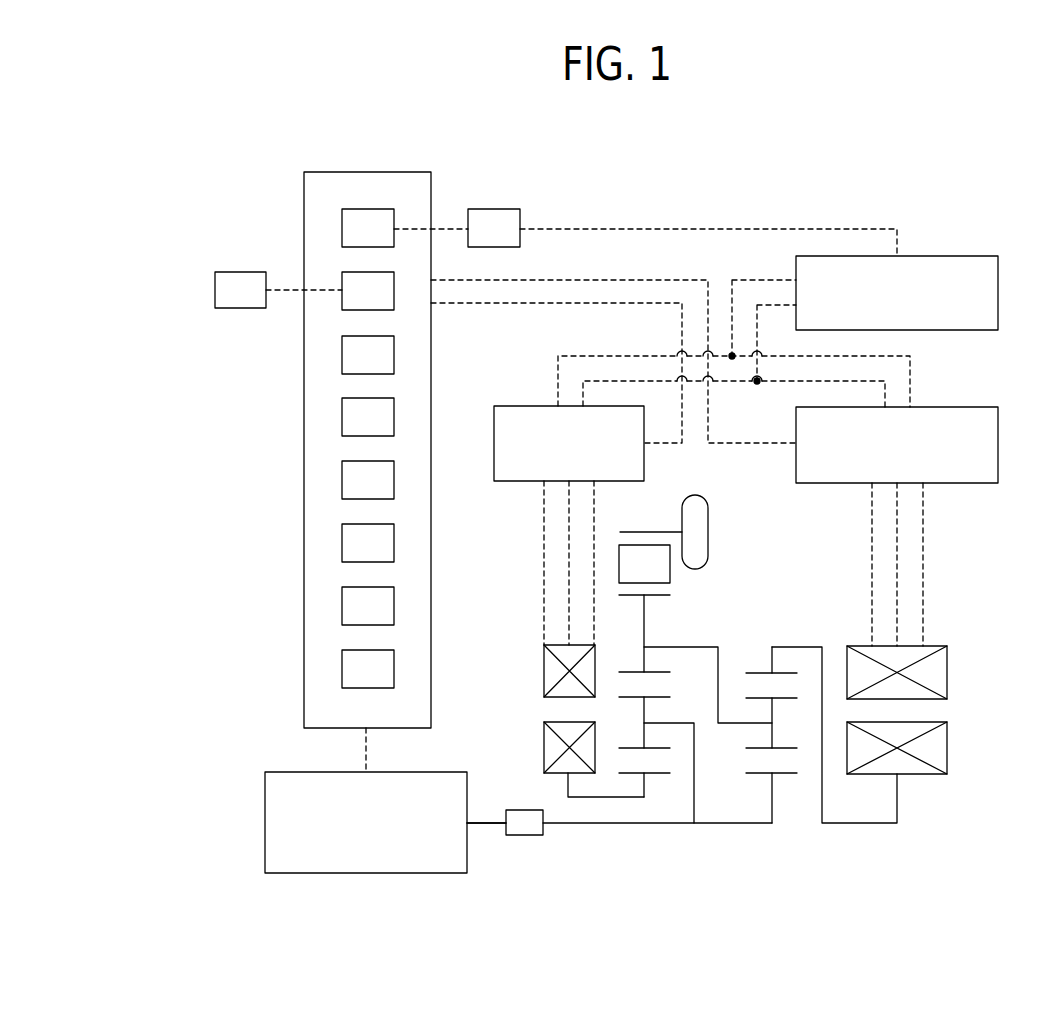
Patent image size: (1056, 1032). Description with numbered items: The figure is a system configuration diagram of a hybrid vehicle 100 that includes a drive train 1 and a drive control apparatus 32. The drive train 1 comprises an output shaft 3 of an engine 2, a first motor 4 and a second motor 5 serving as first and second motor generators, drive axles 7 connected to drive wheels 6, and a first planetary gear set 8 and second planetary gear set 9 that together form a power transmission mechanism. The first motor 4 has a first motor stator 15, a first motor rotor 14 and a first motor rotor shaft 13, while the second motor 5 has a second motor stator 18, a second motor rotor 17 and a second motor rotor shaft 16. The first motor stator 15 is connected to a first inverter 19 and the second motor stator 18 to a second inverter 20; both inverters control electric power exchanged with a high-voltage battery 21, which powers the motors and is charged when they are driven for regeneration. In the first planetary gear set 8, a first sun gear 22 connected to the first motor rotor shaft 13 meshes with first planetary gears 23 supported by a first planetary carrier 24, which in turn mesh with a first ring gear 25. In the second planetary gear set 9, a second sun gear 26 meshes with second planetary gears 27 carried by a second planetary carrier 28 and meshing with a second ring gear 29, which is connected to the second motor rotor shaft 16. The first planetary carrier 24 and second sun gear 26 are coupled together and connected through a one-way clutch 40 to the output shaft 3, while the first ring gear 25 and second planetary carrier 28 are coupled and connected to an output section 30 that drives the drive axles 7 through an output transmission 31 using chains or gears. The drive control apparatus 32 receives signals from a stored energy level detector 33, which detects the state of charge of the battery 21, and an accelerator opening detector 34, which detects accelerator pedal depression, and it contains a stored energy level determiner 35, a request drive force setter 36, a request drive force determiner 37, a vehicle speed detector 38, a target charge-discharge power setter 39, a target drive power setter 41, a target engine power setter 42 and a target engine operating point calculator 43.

The hybrid vehicle 100 is at (838, 195).
The drive train 1 is at (966, 547).
The engine 2 is at (265, 805).
The output shaft 3 is at (487, 823).
The first motor 4 is at (517, 641).
The second motor 5 is at (949, 628).
The drive wheels 6 is at (708, 520).
The drive axles 7 is at (644, 532).
The first planetary gear set 8 is at (693, 628).
The second planetary gear set 9 is at (799, 624).
The first motor rotor shaft 13 is at (604, 797).
The first motor rotor 14 is at (544, 747).
The first motor stator 15 is at (544, 670).
The second motor rotor shaft 16 is at (855, 823).
The second motor rotor 17 is at (947, 745).
The second motor stator 18 is at (947, 668).
The first inverter 19 is at (530, 406).
The second inverter 20 is at (940, 407).
The battery 21 is at (940, 256).
The first sun gear 22 is at (655, 775).
The first planetary gears 23 is at (632, 697).
The first planetary carrier 24 is at (678, 723).
The first ring gear 25 is at (628, 672).
The second sun gear 26 is at (780, 775).
The second planetary gears 27 is at (785, 700).
The second planetary carrier 28 is at (738, 723).
The second ring gear 29 is at (758, 673).
The output section 30 is at (630, 595).
The output transmission 31 is at (619, 562).
The drive control apparatus 32 is at (475, 171).
The stored energy level detector 33 is at (495, 209).
The accelerator opening detector 34 is at (215, 288).
The stored energy level determiner 35 is at (370, 209).
The request drive force setter 36 is at (370, 272).
The request drive force determiner 37 is at (370, 336).
The vehicle speed detector 38 is at (370, 398).
The target charge-discharge power setter 39 is at (370, 461).
The one-way clutch 40 is at (525, 835).
The target drive power setter 41 is at (370, 524).
The target engine power setter 42 is at (370, 587).
The target engine operating point calculator 43 is at (370, 650).